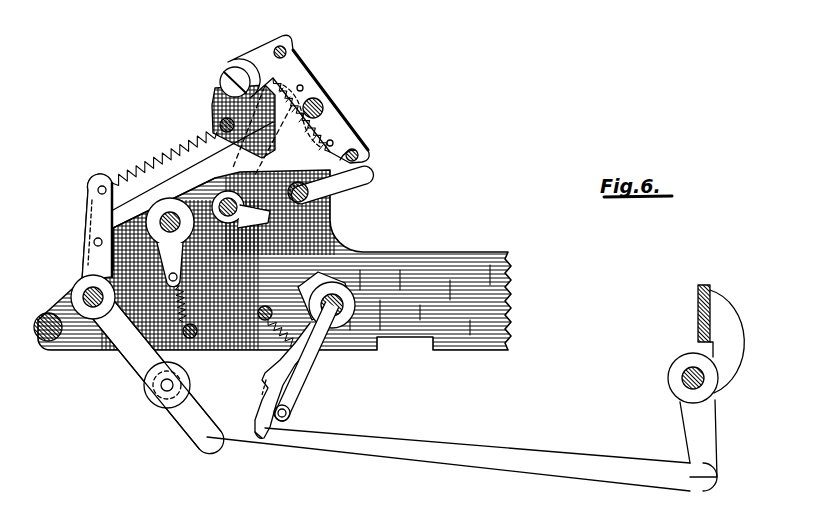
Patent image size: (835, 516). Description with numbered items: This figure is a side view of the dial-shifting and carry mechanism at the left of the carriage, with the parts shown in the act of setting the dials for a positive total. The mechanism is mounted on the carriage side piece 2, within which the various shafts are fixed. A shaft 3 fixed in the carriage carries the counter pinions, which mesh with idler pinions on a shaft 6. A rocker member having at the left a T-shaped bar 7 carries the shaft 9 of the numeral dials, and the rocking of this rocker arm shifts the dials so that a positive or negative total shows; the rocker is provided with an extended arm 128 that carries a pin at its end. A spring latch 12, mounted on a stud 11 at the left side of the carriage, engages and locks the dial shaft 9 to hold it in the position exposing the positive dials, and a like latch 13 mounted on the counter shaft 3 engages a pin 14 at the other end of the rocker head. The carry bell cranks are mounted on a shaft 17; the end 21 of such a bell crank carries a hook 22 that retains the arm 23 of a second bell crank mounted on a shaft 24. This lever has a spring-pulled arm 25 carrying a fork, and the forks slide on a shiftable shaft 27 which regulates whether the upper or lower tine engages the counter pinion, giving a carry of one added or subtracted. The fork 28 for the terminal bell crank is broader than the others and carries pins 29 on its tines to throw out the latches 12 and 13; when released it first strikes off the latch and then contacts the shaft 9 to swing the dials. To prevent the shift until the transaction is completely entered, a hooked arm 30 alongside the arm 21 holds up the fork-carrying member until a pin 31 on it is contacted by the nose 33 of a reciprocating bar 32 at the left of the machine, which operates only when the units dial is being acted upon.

The side piece 2 is at (508, 260).
The shaft 3 is at (310, 194).
The shaft 6 is at (323, 102).
The T-shaped bar 7 is at (308, 115).
The shaft 9 is at (289, 50).
The stud 11 is at (220, 78).
The spring latch 12 is at (257, 63).
The latch 13 is at (377, 172).
The pin 14 is at (358, 152).
The shaft 17 is at (340, 303).
The arm 21 is at (283, 368).
The hook 22 is at (262, 393).
The arm 23 is at (153, 371).
The shaft 24 is at (85, 292).
The arm 25 is at (93, 198).
The shiftable shaft 27 is at (212, 200).
The fork 28 is at (206, 153).
The pin 29 is at (300, 88).
The hooked arm 30 is at (300, 392).
The pin 31 is at (291, 413).
The reciprocating bar 32 is at (340, 433).
The nose 33 is at (262, 437).
The extended arm 128 is at (232, 168).